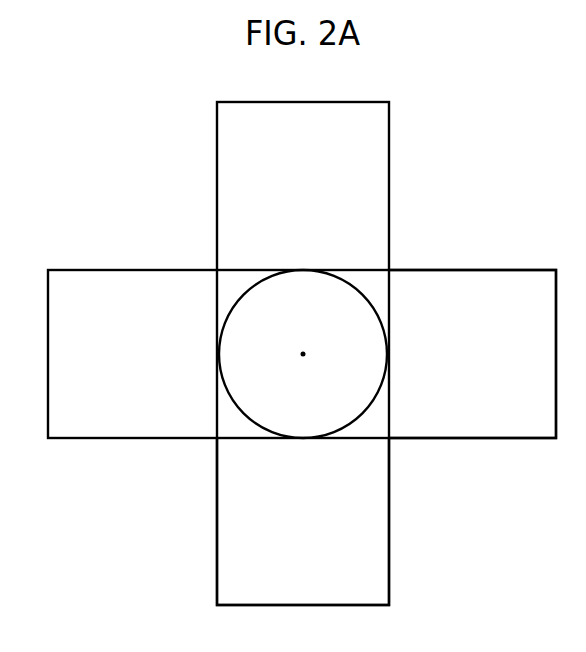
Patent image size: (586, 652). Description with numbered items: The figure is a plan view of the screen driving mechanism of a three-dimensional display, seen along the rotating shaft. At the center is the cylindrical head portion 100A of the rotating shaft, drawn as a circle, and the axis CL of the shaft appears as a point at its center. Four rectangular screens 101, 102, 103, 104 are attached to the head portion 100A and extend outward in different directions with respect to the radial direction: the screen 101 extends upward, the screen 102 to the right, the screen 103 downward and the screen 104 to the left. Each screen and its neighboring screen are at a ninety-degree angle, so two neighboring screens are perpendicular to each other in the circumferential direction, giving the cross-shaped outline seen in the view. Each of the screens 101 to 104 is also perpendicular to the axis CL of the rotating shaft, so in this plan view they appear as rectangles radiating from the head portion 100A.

The screen 101 is at (389, 143).
The screen 102 is at (508, 270).
The screen 103 is at (389, 552).
The screen 104 is at (97, 270).
The cylindrical head portion 100A is at (377, 400).
The axis CL is at (305, 354).